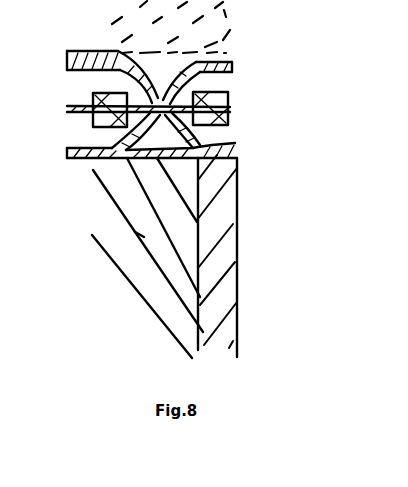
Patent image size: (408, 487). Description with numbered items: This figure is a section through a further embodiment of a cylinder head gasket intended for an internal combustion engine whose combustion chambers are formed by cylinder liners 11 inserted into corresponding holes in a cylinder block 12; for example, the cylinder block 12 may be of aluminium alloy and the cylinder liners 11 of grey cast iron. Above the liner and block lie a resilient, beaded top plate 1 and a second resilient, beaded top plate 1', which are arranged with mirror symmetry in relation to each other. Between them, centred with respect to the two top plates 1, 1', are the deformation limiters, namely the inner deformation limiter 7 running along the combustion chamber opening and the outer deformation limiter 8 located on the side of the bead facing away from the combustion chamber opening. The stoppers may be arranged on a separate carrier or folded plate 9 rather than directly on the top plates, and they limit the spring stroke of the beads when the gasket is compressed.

The top plate 1 is at (177, 62).
The second top plate 1' is at (182, 144).
The inner deformation limiter 7 is at (233, 93).
The outer deformation limiter 8 is at (96, 86).
The carrier plate 9 is at (83, 108).
The cylinder liner 11 is at (219, 212).
The cylinder block 12 is at (296, 308).